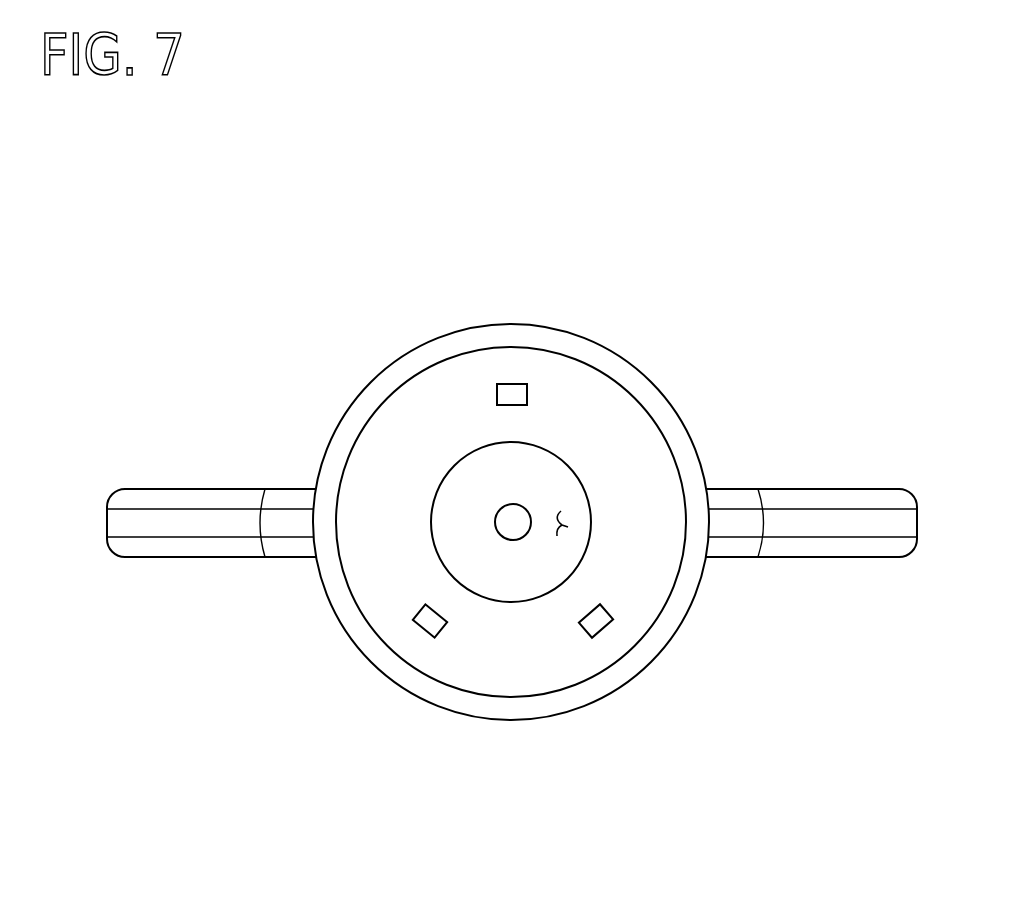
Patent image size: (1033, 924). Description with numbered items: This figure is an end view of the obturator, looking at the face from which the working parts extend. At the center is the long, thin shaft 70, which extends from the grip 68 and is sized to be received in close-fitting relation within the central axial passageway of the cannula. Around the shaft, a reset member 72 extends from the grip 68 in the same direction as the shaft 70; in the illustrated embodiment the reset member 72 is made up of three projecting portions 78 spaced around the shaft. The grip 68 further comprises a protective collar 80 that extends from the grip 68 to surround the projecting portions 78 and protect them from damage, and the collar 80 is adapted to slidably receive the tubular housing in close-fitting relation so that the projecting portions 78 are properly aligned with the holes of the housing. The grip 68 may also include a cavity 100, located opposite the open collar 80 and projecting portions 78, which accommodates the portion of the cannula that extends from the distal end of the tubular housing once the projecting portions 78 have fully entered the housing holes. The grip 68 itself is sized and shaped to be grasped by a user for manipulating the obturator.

The grip 68 is at (830, 523).
The shaft 70 is at (506, 540).
The reset member 72 is at (505, 372).
The projecting portions 78 is at (520, 393).
The protective collar 80 is at (377, 387).
The cavity 100 is at (568, 527).